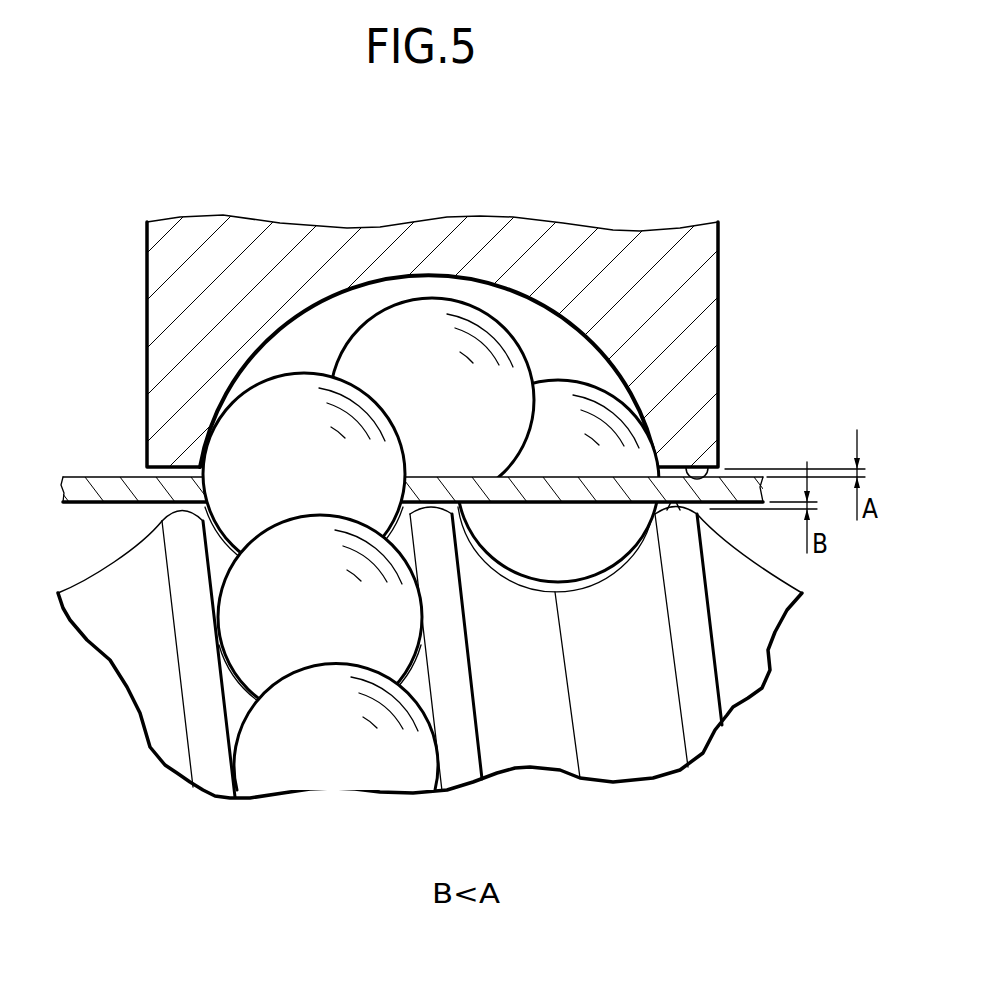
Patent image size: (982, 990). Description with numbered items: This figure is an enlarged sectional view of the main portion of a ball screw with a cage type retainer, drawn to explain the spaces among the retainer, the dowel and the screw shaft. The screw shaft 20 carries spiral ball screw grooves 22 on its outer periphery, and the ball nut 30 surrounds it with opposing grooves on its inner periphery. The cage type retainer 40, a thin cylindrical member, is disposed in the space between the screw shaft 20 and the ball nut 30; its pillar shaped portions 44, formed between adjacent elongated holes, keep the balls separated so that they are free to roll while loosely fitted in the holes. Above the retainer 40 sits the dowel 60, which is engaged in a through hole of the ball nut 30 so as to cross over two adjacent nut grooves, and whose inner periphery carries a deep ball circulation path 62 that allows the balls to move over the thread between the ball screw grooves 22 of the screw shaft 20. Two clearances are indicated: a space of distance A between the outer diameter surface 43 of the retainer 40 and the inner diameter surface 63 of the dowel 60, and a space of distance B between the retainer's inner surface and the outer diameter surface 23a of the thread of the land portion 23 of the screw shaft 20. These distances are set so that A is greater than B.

The screw shaft 20 is at (65, 576).
The ball screw grooves 22 is at (528, 746).
The land portion 23 is at (703, 718).
The outer diameter surface of the thread of the land portion 23a is at (697, 514).
The ball nut 30 is at (103, 280).
The cage type retainer 40 is at (411, 476).
The outer diameter surface of the retainer 43 is at (75, 476).
The pillar shaped portions 44 is at (115, 503).
The dowel 60 is at (586, 208).
The ball circulation path 62 is at (580, 334).
The inner diameter surface of the dowel 63 is at (707, 467).